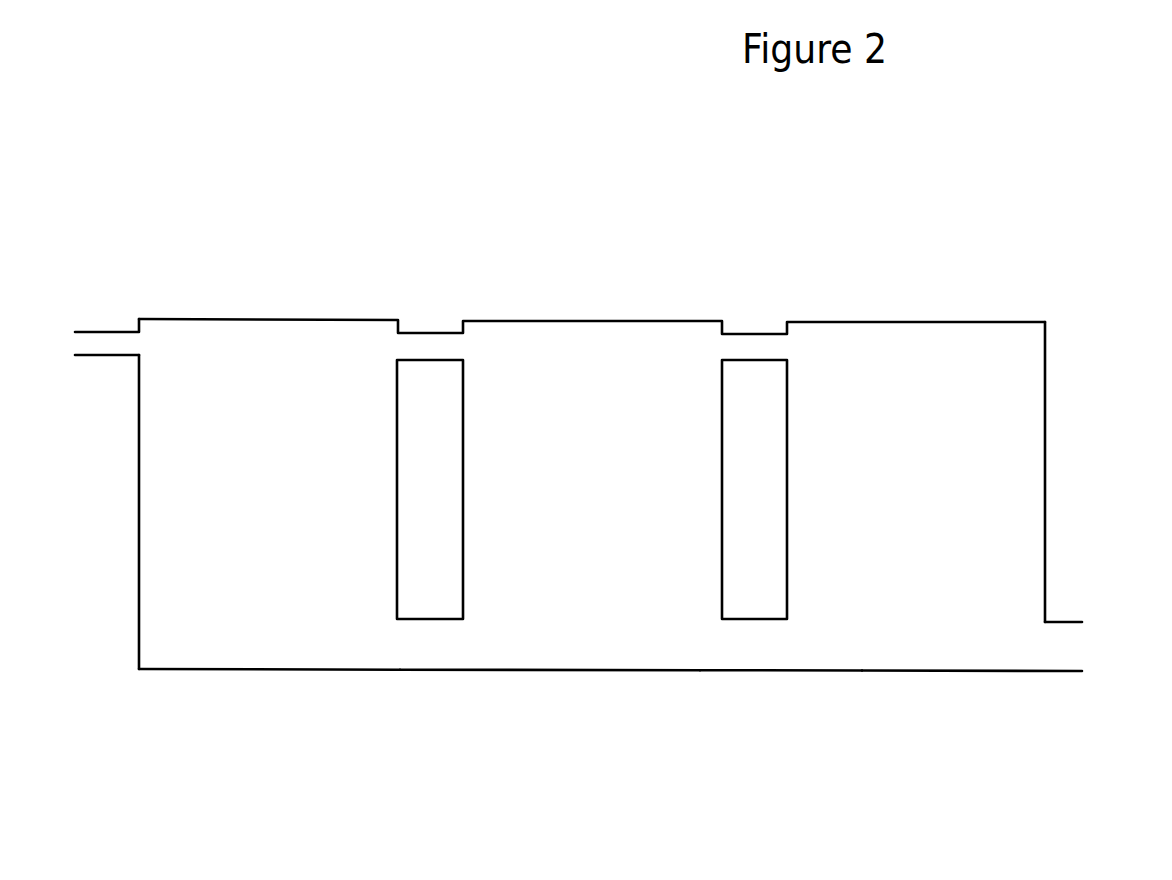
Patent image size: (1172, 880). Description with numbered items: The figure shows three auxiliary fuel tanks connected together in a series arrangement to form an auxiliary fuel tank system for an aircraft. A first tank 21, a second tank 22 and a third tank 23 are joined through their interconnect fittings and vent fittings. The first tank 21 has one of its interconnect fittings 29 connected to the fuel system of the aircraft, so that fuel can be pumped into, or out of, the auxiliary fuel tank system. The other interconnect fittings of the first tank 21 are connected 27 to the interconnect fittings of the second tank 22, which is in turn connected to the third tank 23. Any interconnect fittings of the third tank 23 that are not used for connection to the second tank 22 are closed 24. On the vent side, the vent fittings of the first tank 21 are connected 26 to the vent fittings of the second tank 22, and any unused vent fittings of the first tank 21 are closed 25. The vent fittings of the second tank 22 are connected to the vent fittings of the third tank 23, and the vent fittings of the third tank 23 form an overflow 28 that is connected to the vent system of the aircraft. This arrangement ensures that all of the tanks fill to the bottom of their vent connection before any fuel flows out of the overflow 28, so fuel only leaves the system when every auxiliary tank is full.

The first tank 21 is at (948, 678).
The second tank 22 is at (602, 678).
The third tank 23 is at (265, 677).
The closed interconnect fitting 24 is at (128, 640).
The closed vent fitting 25 is at (1052, 352).
The vent connection 26 is at (758, 327).
The interconnect connection 27 is at (752, 675).
The overflow 28 is at (93, 323).
The interconnect fitting 29 is at (1082, 613).